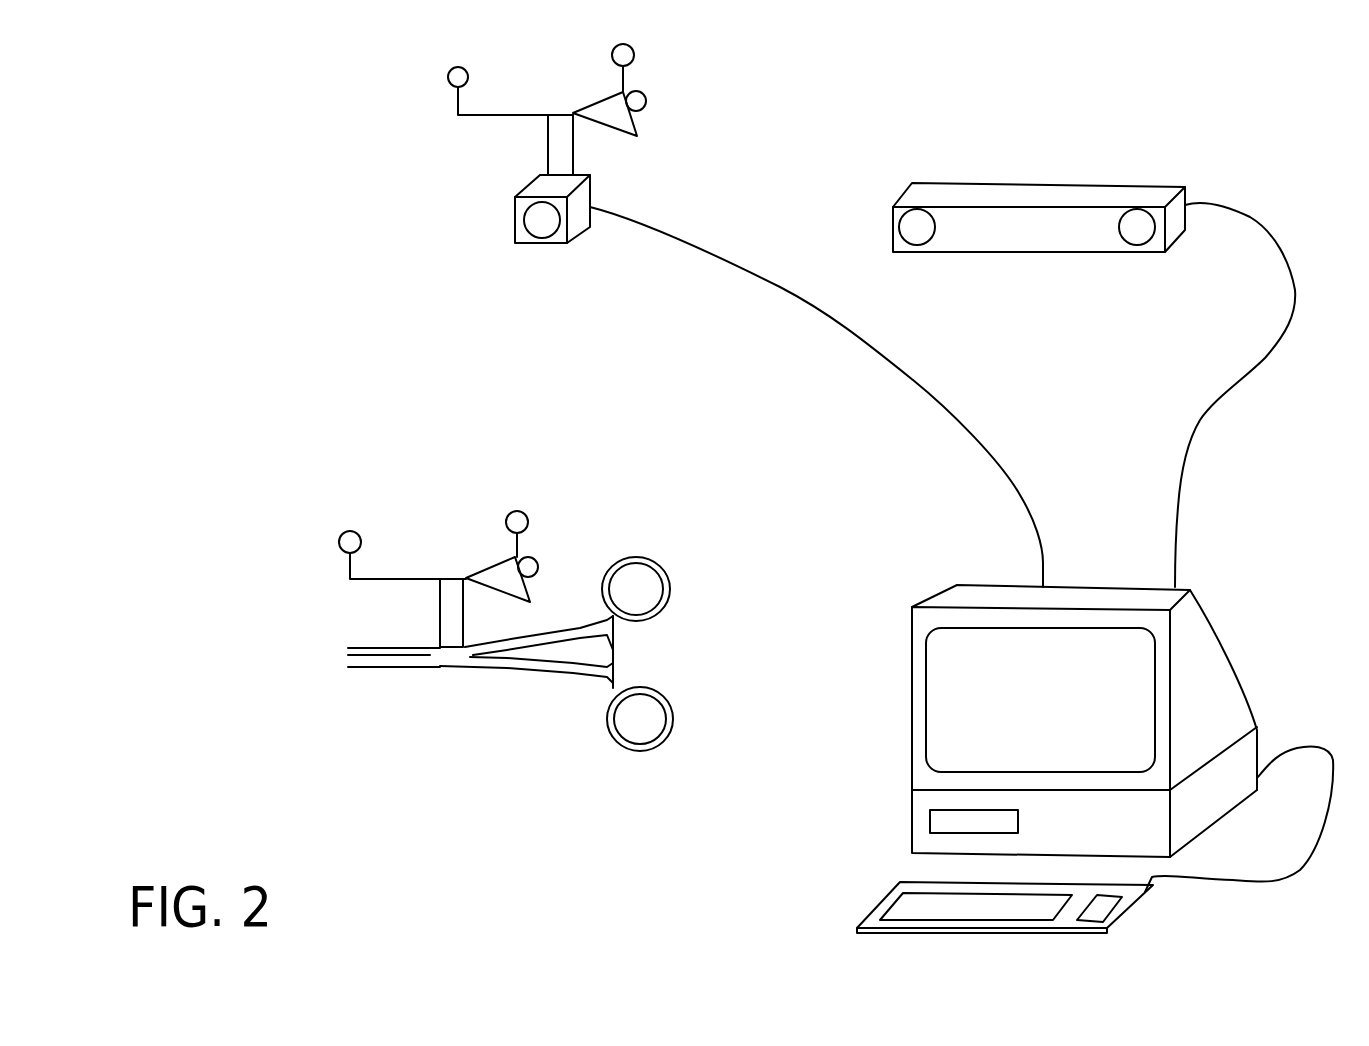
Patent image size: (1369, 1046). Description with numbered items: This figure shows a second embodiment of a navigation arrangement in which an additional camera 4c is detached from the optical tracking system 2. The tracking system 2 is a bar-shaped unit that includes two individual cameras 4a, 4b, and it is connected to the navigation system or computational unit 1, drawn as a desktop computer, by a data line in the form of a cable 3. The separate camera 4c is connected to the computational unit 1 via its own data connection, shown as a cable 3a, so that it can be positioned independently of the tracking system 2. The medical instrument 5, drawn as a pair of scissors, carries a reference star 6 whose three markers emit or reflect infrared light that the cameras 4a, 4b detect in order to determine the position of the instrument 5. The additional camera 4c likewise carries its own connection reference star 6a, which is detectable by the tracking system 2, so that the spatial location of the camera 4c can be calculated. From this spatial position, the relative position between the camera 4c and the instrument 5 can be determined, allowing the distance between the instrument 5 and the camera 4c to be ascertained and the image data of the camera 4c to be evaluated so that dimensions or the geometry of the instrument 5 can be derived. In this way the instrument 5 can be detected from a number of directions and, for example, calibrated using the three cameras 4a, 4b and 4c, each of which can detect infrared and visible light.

The navigation system 1 is at (1223, 643).
The optical tracking system 2 is at (1067, 253).
The cable 3 is at (1228, 390).
The cable 3a is at (867, 343).
The camera 4a is at (915, 228).
The camera 4b is at (1140, 228).
The camera 4c is at (515, 212).
The medical instrument 5 is at (547, 672).
The reference star 6 is at (397, 578).
The reference star 6a is at (638, 122).